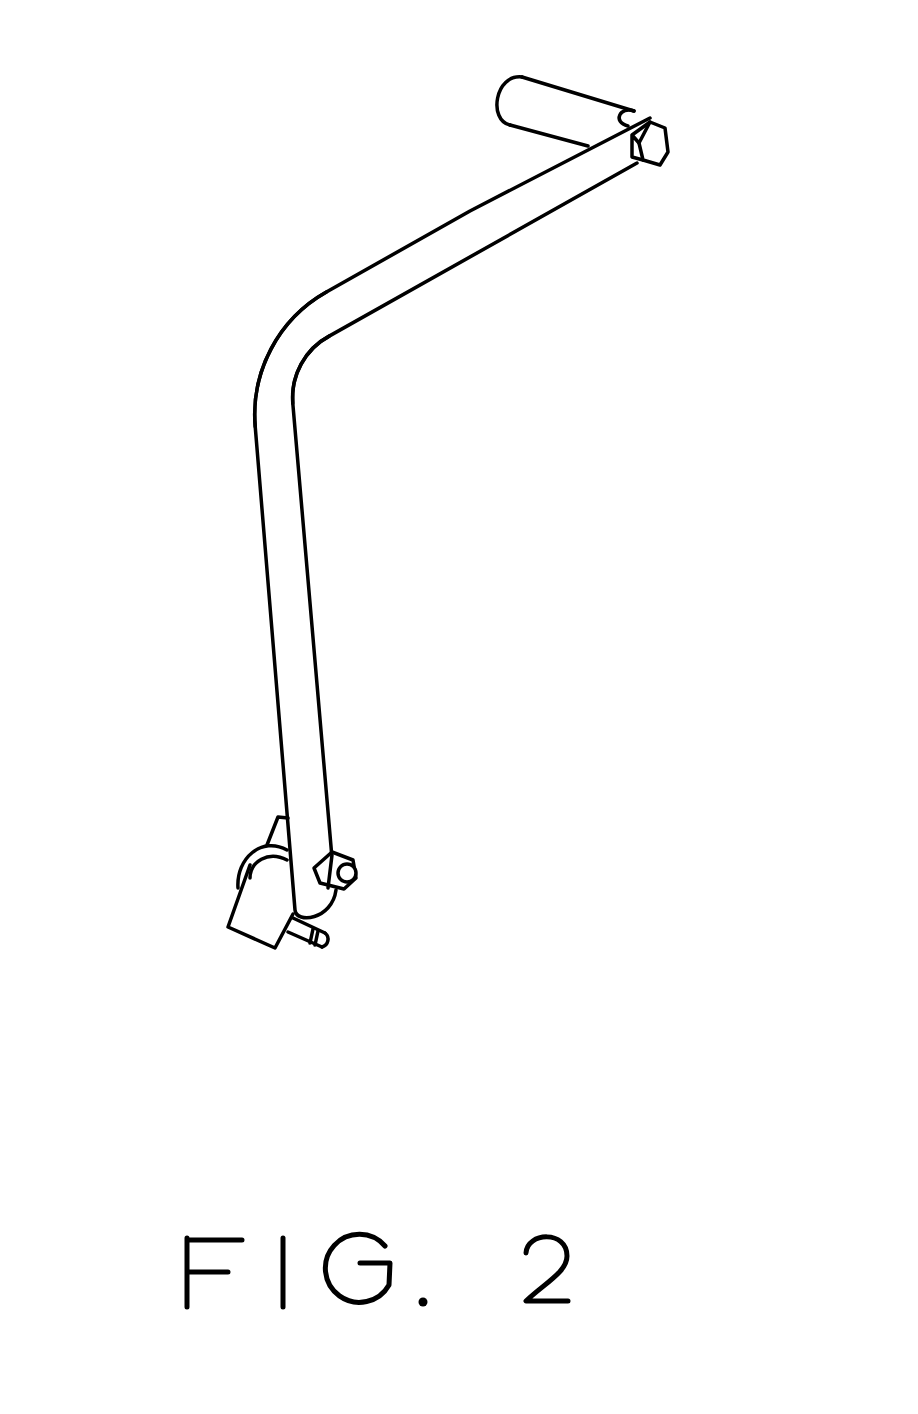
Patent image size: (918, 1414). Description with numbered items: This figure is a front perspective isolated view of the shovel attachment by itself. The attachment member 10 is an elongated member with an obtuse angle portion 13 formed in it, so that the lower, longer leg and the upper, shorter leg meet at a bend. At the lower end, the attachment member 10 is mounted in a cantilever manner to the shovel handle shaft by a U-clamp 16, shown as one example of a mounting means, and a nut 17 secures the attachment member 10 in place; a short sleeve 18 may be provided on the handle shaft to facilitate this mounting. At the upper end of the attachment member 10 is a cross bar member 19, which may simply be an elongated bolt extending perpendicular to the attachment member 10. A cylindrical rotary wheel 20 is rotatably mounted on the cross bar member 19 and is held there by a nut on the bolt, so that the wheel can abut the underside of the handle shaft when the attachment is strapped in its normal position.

The attachment member 10 is at (407, 246).
The obtuse angle portion 13 is at (285, 352).
The U-clamp 16 is at (239, 861).
The nut 17 is at (411, 844).
The short sleeve 18 is at (182, 911).
The cross bar member 19 is at (780, 88).
The cylindrical rotary wheel 20 is at (688, 15).